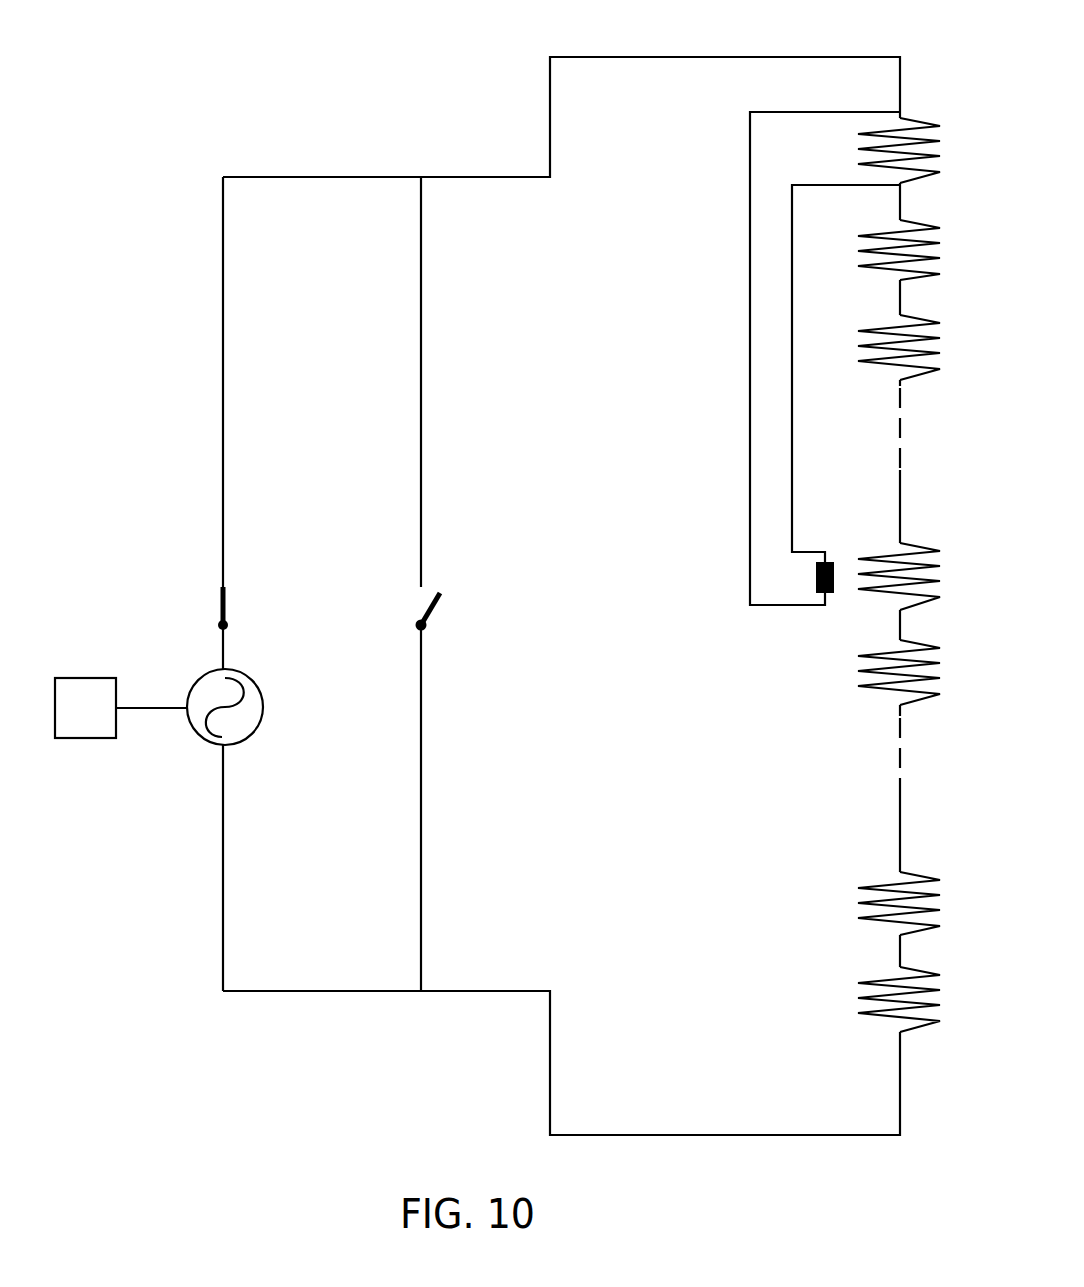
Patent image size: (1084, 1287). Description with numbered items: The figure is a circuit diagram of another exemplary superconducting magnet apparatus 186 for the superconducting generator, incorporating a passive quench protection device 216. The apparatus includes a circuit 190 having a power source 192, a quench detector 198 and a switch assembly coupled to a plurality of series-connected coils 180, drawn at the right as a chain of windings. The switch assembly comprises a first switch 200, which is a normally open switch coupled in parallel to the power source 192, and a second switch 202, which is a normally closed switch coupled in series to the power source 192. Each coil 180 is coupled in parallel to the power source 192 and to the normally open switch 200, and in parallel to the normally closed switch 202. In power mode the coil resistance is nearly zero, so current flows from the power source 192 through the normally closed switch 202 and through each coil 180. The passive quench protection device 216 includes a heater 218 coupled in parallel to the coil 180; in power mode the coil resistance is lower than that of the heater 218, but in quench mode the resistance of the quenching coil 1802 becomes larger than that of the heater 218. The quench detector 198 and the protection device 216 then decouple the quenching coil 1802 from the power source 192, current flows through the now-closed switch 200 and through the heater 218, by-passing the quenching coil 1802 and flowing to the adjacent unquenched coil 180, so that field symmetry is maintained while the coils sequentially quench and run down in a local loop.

The coil 180 is at (857, 522).
The quenching coil 1802 is at (916, 118).
The superconducting magnet apparatus 186 is at (326, 84).
The circuit 190 is at (223, 258).
The power source 192 is at (196, 740).
The quench detector 198 is at (86, 678).
The first switch 200 is at (434, 606).
The second switch 202 is at (226, 607).
The passive quench protection device 216 is at (728, 610).
The heater 218 is at (816, 578).